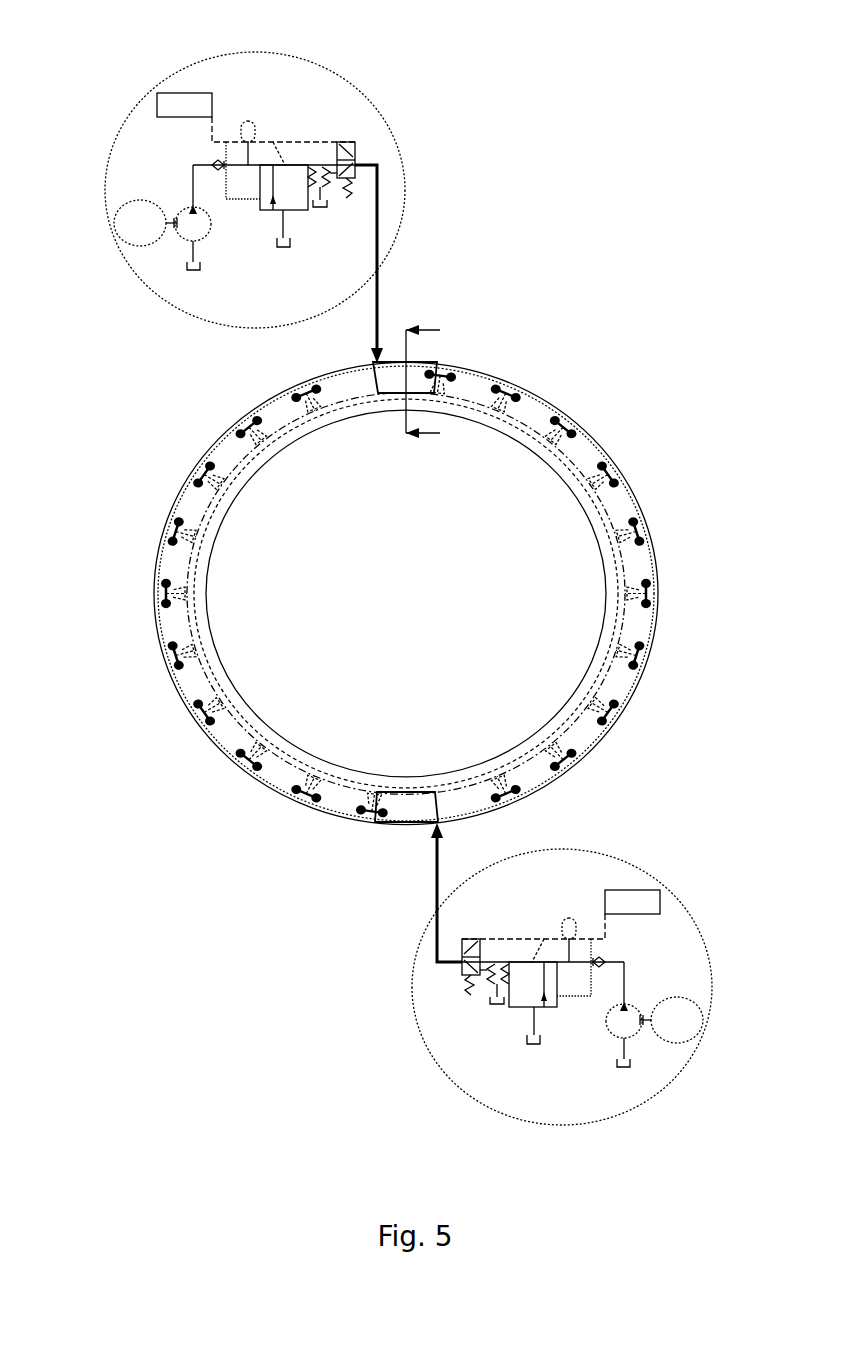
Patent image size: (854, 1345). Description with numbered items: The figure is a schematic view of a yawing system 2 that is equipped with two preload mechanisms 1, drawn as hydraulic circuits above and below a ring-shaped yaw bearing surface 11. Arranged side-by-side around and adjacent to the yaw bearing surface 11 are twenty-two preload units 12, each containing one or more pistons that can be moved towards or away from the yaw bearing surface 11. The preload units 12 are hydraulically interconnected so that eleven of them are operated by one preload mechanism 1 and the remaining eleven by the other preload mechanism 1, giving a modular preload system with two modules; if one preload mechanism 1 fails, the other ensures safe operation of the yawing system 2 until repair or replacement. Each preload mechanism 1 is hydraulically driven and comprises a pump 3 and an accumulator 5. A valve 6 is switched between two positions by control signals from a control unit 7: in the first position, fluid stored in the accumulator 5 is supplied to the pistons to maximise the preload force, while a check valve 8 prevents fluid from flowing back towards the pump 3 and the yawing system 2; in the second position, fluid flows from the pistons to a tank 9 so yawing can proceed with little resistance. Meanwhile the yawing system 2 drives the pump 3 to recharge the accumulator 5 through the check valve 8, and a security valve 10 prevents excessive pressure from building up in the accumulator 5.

The preload mechanism 1 is at (357, 87).
The yawing system 2 is at (605, 448).
The pump 3 is at (181, 232).
The accumulator 5 is at (254, 128).
The valve 6 is at (354, 154).
The control unit 7 is at (175, 93).
The check valve 8 is at (215, 163).
The tank 9 is at (317, 206).
The security valve 10 is at (266, 207).
The yaw bearing surface 11 is at (193, 597).
The preload units 12 is at (188, 503).